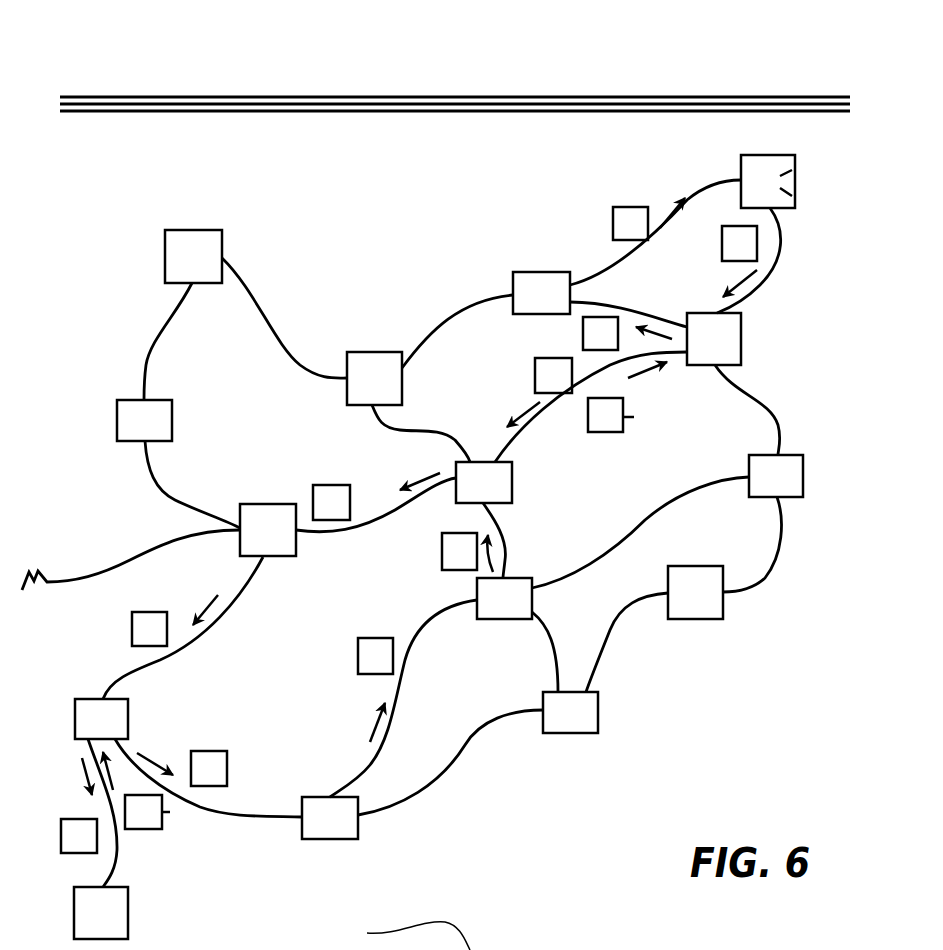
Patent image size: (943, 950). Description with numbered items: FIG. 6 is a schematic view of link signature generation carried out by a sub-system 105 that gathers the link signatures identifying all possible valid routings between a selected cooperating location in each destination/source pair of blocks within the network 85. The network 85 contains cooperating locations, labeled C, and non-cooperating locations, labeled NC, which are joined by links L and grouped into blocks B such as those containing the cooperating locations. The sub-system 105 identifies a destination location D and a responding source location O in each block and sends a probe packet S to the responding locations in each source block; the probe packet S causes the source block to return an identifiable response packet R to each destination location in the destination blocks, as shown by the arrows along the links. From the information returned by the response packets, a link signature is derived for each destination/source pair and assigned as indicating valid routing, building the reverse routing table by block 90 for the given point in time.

The sub-system for link signature generation 105 is at (729, 87).
The network 85 is at (797, 418).
The reverse routing table by block 90 is at (399, 934).